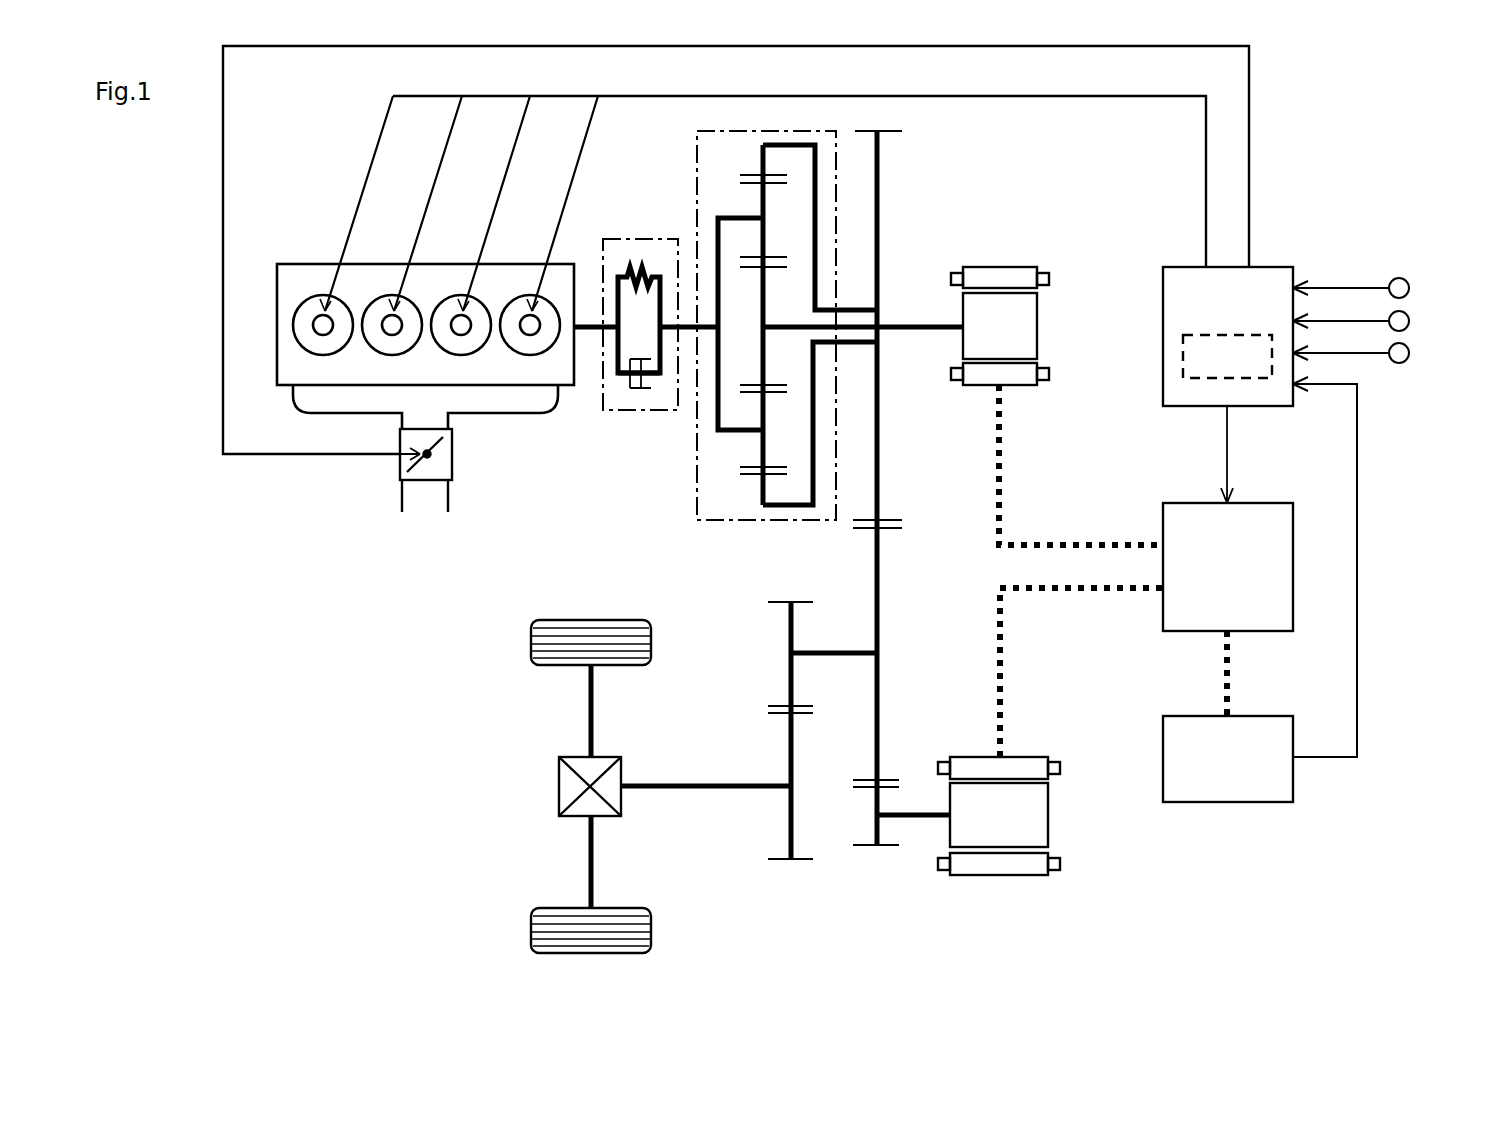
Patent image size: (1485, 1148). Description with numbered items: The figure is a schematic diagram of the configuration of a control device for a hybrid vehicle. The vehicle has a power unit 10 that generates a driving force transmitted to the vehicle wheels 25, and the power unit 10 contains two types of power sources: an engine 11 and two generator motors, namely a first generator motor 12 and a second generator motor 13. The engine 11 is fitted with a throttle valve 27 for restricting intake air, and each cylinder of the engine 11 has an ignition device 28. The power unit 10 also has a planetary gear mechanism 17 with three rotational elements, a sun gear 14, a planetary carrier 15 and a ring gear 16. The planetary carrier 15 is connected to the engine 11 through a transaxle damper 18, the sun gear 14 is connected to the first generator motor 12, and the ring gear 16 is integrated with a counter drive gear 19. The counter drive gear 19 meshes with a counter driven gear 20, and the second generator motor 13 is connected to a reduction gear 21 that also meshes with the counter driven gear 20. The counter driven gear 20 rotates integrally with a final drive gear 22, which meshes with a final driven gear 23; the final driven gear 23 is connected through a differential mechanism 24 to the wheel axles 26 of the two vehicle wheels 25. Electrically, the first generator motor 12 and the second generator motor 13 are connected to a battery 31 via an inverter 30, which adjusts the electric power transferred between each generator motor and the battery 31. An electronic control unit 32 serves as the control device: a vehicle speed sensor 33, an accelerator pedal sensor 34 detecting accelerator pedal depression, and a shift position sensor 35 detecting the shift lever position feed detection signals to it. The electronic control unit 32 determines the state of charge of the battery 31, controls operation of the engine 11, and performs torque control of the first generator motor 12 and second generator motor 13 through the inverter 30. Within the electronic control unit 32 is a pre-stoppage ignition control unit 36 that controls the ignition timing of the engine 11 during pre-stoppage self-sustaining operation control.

The power unit 10 is at (1057, 173).
The engine 11 is at (292, 264).
The first generator motor 12 is at (1040, 324).
The second generator motor 13 is at (1050, 814).
The sun gear 14 is at (760, 350).
The planetary carrier 15 is at (737, 217).
The ring gear 16 is at (763, 490).
The planetary gear mechanism 17 is at (697, 183).
The transaxle damper 18 is at (640, 412).
The counter drive gear 19 is at (880, 493).
The counter driven gear 20 is at (880, 548).
The reduction gear 21 is at (875, 800).
The final drive gear 22 is at (789, 611).
The final driven gear 23 is at (789, 721).
The differential mechanism 24 is at (559, 783).
The vehicle wheels 25 is at (531, 638).
The wheel axles 26 is at (594, 710).
The throttle valve 27 is at (452, 455).
The ignition device 28 is at (392, 335).
The inverter 30 is at (1163, 516).
The battery 31 is at (1163, 740).
The electronic control unit 32 is at (1163, 292).
The vehicle speed sensor 33 is at (1409, 288).
The accelerator pedal sensor 34 is at (1409, 321).
The shift position sensor 35 is at (1409, 353).
The pre-stoppage ignition control unit 36 is at (1183, 360).